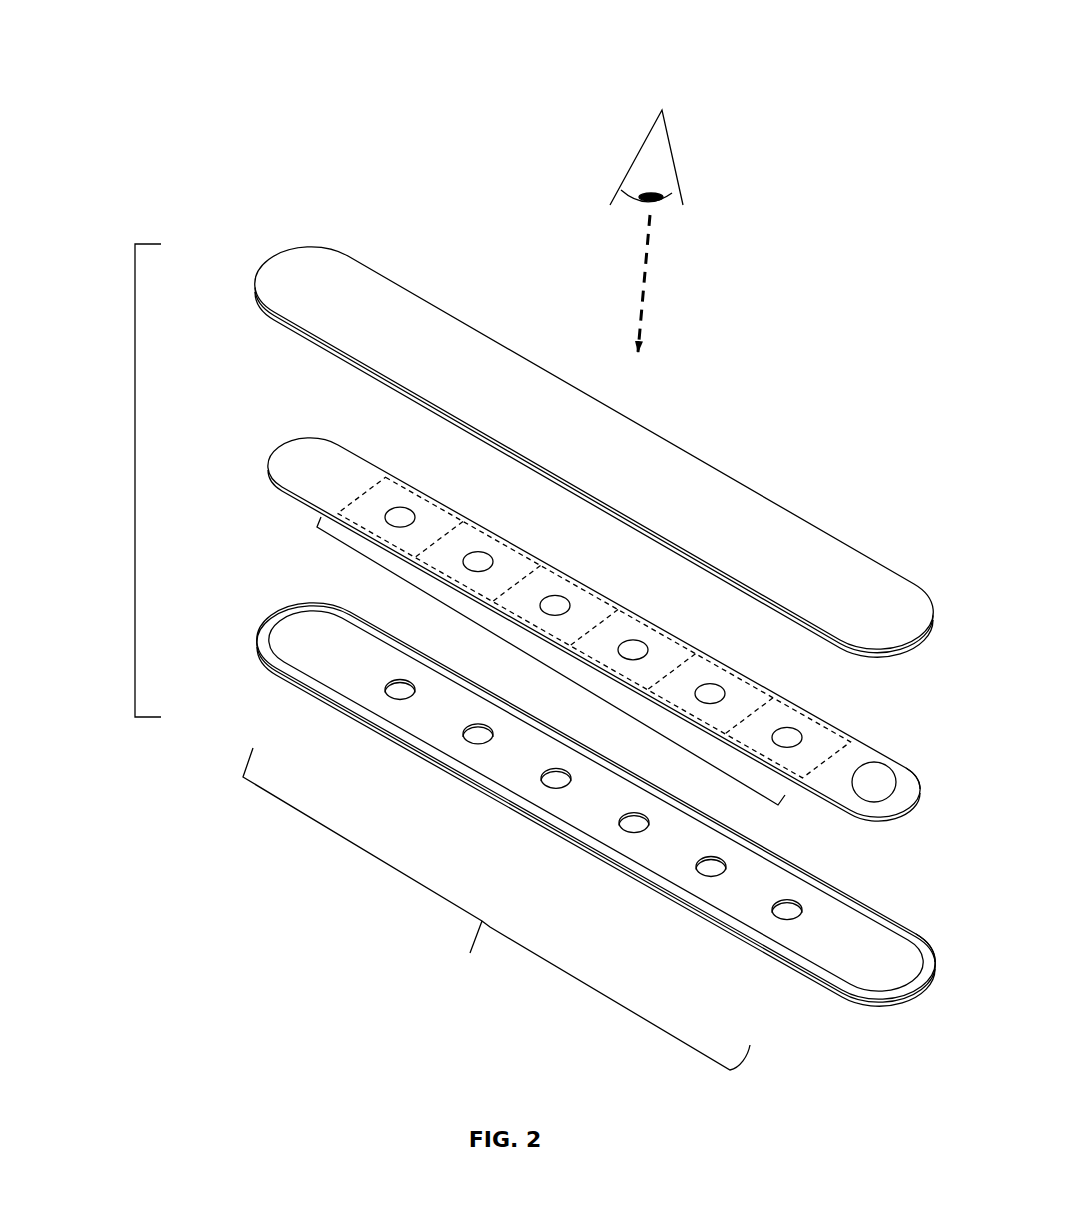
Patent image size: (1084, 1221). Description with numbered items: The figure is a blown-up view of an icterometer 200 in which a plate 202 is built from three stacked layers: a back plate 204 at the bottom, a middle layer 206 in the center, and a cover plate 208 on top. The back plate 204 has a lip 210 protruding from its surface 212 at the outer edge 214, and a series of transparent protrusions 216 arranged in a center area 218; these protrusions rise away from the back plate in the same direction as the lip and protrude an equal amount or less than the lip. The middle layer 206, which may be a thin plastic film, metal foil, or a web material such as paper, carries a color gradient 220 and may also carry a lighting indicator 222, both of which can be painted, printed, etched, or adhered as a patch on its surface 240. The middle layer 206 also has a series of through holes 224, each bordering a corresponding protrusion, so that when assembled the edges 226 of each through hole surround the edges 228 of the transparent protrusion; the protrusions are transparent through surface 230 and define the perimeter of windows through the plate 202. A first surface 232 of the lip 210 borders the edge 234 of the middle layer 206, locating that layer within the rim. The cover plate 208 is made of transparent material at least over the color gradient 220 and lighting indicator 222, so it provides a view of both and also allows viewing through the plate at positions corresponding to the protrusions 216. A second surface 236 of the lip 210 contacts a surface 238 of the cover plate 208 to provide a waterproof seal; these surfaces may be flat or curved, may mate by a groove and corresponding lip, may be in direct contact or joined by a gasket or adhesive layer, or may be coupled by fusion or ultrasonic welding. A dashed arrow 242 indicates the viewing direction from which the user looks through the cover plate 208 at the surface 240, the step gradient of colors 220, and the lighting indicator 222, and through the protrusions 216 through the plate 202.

The icterometer 200 is at (290, 122).
The plate 202 is at (135, 486).
The back plate 204 is at (247, 640).
The middle layer 206 is at (253, 470).
The cover plate 208 is at (247, 293).
The lip 210 is at (374, 717).
The surface 212 is at (437, 730).
The outer edge 214 is at (500, 800).
The transparent protrusions 216 is at (628, 818).
The center area 218 is at (496, 909).
The color gradient 220 is at (543, 663).
The lighting indicator 222 is at (882, 788).
The through holes 224 is at (642, 646).
The edges of through hole 226 is at (633, 645).
The edges of transparent protrusion 228 is at (635, 838).
The surface 230 is at (640, 815).
The first surface of lip 232 is at (903, 947).
The edge of the middle layer 234 is at (900, 757).
The second surface of lip 236 is at (282, 617).
The surface of the cover plate 238 is at (288, 343).
The surface of the middle layer 240 is at (390, 492).
The dashed arrow 242 is at (645, 288).